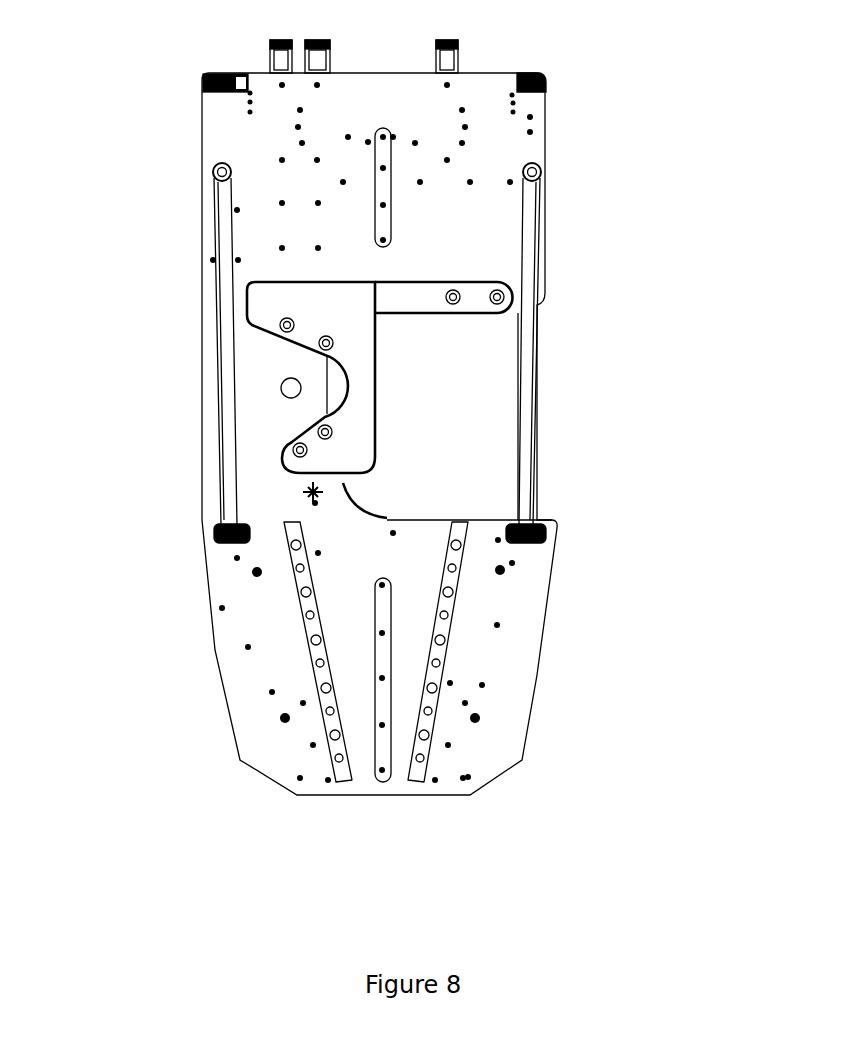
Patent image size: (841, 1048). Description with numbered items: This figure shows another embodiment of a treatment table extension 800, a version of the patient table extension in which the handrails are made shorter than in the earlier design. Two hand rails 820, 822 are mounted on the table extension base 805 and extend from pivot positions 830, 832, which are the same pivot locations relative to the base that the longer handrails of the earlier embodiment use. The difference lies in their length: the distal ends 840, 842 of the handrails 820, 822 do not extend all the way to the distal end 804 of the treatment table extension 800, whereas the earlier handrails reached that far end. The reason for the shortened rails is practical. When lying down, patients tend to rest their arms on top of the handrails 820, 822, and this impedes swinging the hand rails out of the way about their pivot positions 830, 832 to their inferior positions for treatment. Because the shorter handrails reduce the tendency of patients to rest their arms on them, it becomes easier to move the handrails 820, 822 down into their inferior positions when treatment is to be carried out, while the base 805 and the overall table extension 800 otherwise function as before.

The treatment table extension 800 is at (210, 628).
The distal end of the treatment table extension 804 is at (538, 675).
The table extension base 805 is at (202, 100).
The handrail 820 is at (213, 288).
The handrail 822 is at (538, 318).
The pivot position 830 is at (222, 518).
The pivot position 832 is at (540, 520).
The distal end of the handrail 840 is at (202, 170).
The distal end of the handrail 842 is at (545, 168).